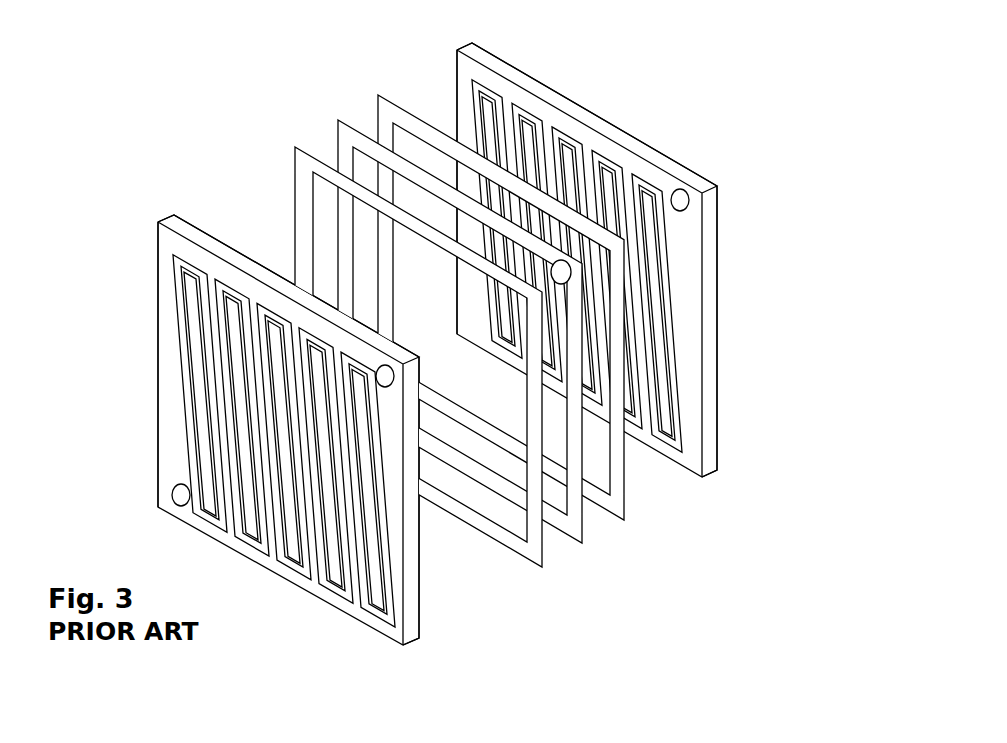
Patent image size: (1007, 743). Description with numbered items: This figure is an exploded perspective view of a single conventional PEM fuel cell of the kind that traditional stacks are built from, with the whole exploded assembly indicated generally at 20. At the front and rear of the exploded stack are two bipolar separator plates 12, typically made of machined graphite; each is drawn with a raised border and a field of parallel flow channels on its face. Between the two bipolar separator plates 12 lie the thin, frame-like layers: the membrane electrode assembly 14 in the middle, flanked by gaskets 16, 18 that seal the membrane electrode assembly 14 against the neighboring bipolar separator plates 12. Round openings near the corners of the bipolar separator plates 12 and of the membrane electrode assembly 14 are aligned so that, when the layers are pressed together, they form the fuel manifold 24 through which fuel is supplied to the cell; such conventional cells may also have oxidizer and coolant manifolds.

The bipolar separator plate 12 is at (456, 71).
The membrane electrode assembly 14 is at (366, 161).
The gasket 16 is at (542, 553).
The gasket 18 is at (617, 503).
The fuel cell stack assembly 20 is at (779, 151).
The fuel manifold 24 is at (175, 494).